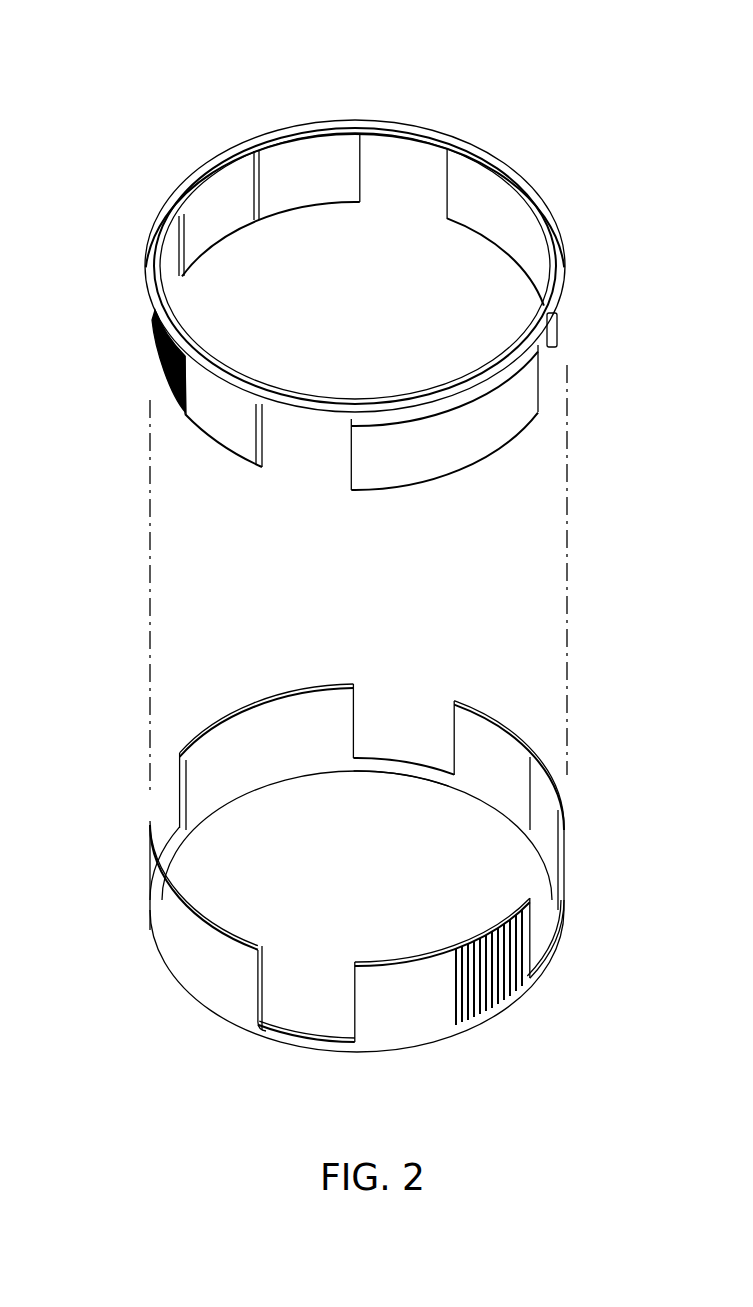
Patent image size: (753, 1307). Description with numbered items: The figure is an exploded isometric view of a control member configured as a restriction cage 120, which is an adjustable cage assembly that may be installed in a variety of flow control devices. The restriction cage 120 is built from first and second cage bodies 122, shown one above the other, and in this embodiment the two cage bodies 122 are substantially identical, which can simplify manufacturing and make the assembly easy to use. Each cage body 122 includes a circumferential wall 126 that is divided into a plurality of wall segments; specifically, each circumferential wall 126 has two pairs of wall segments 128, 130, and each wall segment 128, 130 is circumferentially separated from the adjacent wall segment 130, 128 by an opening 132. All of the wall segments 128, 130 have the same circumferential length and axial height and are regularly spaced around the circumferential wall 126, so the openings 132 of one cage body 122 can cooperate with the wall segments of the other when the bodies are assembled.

The restriction cage 120 is at (481, 93).
The cage body 122 is at (165, 205).
The circumferential wall 126 is at (488, 430).
The wall segment 128 is at (318, 212).
The wall segment 130 is at (500, 258).
The opening 132 is at (398, 162).